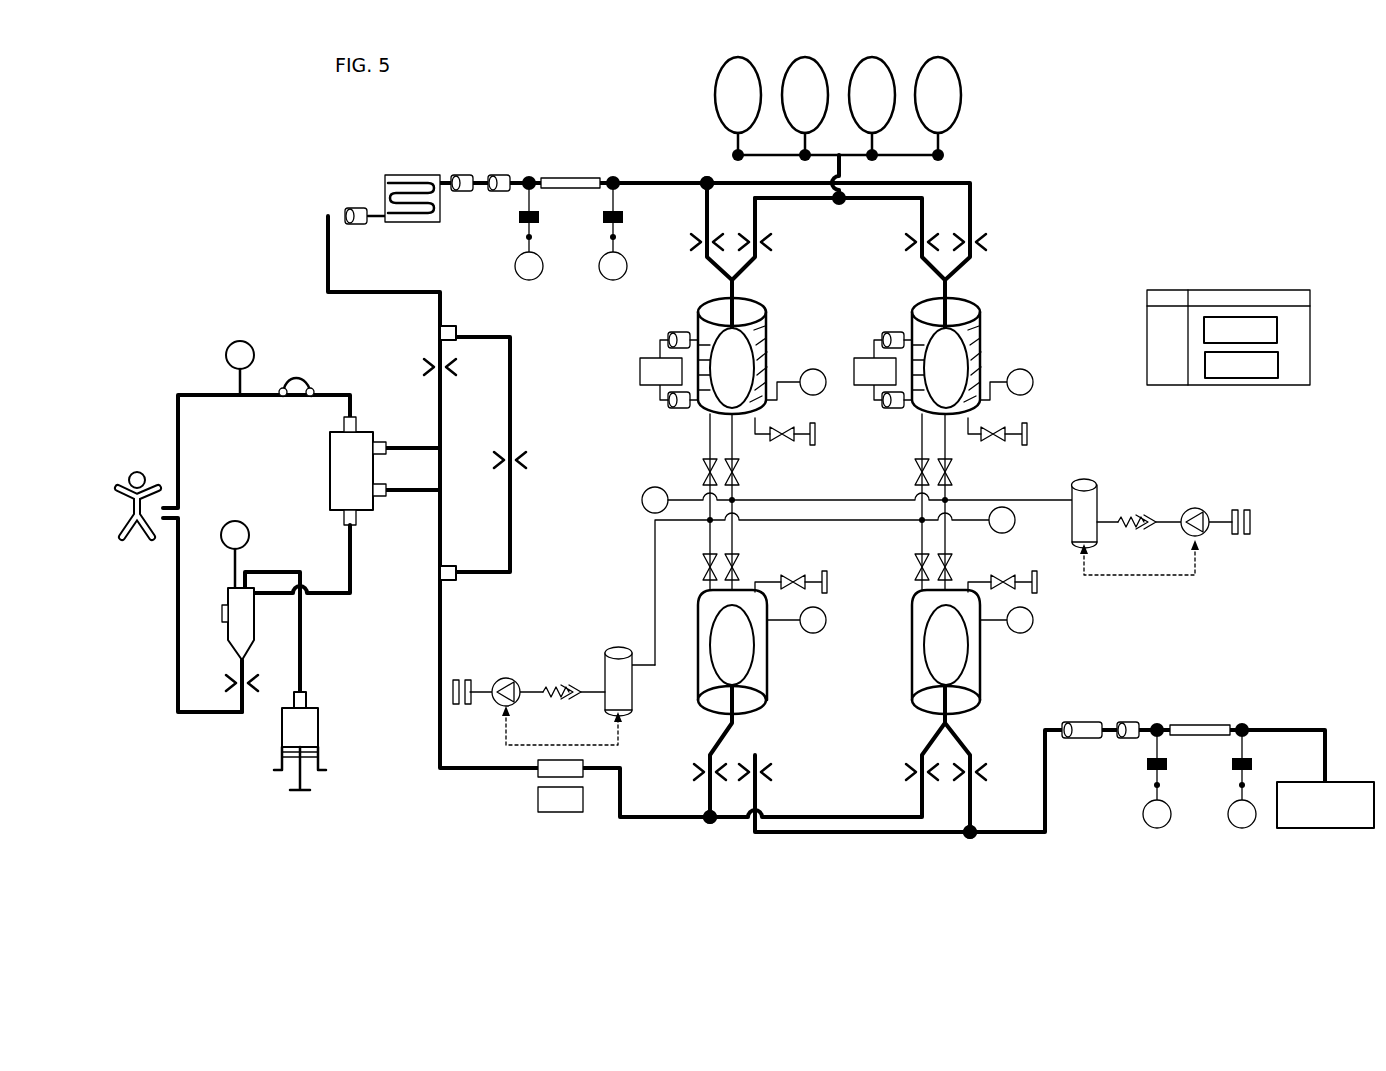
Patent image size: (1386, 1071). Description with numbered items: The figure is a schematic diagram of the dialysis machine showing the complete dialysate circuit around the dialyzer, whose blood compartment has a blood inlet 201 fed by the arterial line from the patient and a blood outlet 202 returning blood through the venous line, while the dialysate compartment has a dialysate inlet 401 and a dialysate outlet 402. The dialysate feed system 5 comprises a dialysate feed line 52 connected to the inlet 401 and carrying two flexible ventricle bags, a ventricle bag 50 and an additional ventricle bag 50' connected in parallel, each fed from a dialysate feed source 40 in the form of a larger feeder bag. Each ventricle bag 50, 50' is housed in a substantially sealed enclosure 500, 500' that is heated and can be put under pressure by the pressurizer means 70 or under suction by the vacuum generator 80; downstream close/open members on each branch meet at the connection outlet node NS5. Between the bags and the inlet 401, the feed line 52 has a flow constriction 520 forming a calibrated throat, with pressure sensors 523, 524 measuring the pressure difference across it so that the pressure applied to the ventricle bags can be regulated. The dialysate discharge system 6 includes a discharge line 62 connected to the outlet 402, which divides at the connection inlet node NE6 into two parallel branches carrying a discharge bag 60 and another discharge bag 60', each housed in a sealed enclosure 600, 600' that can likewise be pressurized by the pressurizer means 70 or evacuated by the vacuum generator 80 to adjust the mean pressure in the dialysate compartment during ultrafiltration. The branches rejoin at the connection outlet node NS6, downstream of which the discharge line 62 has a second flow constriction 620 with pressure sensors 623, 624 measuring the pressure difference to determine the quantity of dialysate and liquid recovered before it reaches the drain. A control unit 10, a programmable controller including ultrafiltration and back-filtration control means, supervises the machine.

The dialysate feed source 40 is at (966, 103).
The connection outlet node NS5 is at (707, 180).
The dialysate feed line 52 is at (668, 180).
The flow constriction 520 is at (572, 178).
The pressure sensor 524 is at (532, 280).
The pressure sensor 523 is at (613, 280).
The sealed enclosure 500 is at (760, 345).
The sealed enclosure 500' is at (976, 345).
The ventricle bag 50 is at (757, 368).
The additional ventricle bag 50' is at (974, 368).
The sealed enclosure 600 is at (760, 662).
The sealed enclosure 600' is at (975, 662).
The discharge bag 60 is at (757, 645).
The other discharge bag 60' is at (974, 645).
The dialysate feed system 5 is at (1043, 341).
The dialysate discharge system 6 is at (1063, 674).
The pressurizer means 70 is at (1100, 470).
The vacuum generator 80 is at (624, 609).
The control unit 10 is at (1246, 290).
The discharge line 62 is at (443, 636).
The flow constriction 620 is at (1197, 725).
The pressure sensor 623 is at (1160, 828).
The pressure sensor 624 is at (1244, 828).
The blood inlet 201 is at (338, 420).
The blood outlet 202 is at (330, 518).
The dialysate inlet 401 is at (381, 440).
The dialysate outlet 402 is at (381, 500).
The connection inlet node NE6 is at (705, 822).
The connection outlet node NS6 is at (970, 839).